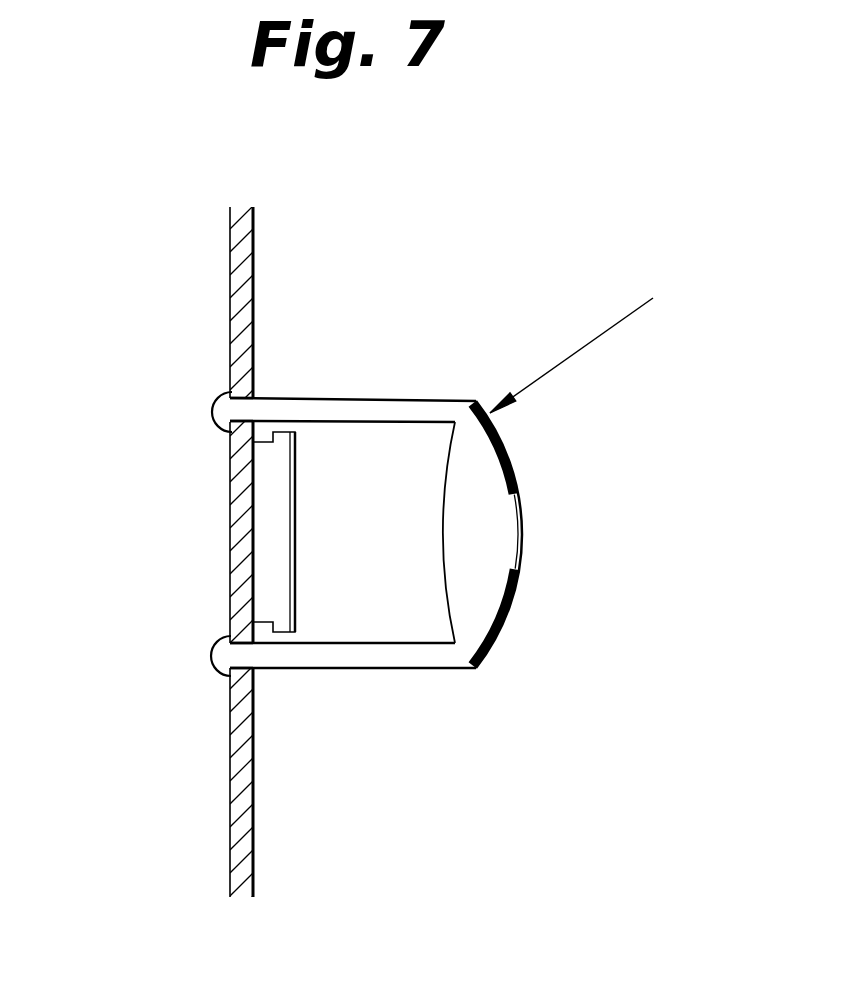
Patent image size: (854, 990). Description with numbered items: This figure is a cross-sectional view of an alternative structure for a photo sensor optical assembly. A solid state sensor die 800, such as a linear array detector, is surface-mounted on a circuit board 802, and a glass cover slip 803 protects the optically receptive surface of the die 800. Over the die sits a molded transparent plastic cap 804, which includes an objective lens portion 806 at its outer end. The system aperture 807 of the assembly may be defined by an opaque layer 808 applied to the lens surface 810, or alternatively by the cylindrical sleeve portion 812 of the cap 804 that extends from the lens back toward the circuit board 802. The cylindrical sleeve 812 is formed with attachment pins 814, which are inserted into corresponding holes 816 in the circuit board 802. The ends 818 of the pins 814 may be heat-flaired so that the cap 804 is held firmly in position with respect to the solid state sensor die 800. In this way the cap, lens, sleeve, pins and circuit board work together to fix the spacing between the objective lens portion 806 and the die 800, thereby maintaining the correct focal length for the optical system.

The solid state sensor die 800 is at (263, 450).
The circuit board 802 is at (243, 258).
The glass cover slip 803 is at (287, 443).
The molded transparent plastic cap 804 is at (606, 339).
The objective lens portion 806 is at (501, 553).
The system aperture 807 is at (520, 518).
The opaque layer 808 is at (510, 623).
The lens surface 810 is at (518, 552).
The cylindrical sleeve portion 812 is at (340, 672).
The attachment pins 814 is at (235, 663).
The holes 816 is at (243, 652).
The ends of the pins 818 is at (208, 656).